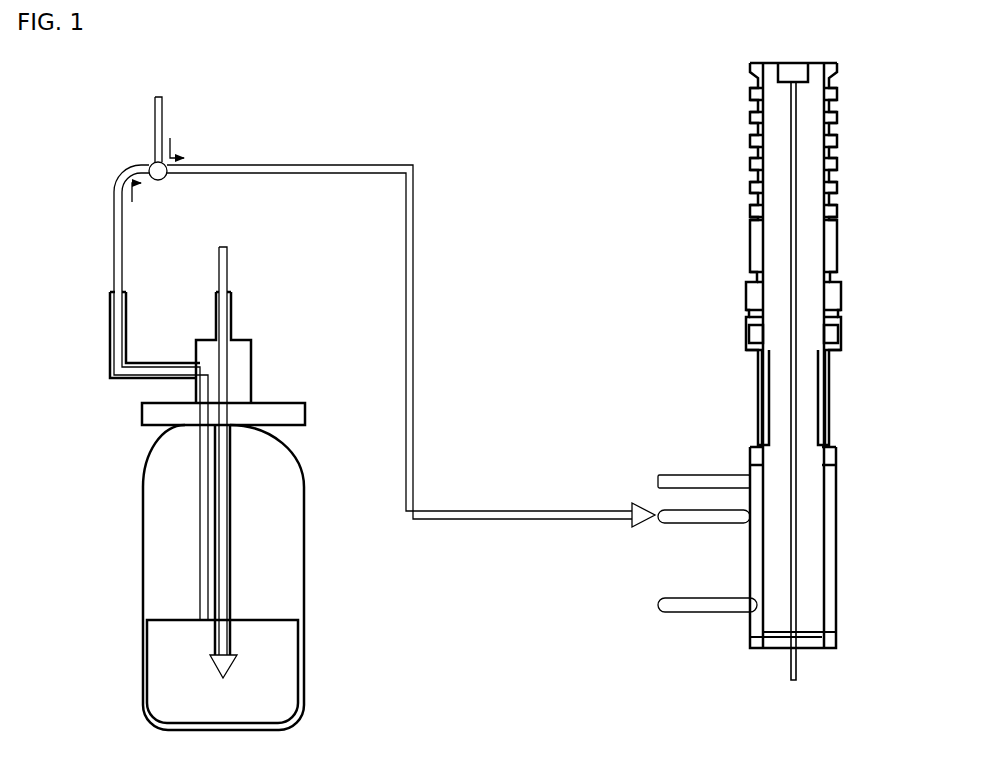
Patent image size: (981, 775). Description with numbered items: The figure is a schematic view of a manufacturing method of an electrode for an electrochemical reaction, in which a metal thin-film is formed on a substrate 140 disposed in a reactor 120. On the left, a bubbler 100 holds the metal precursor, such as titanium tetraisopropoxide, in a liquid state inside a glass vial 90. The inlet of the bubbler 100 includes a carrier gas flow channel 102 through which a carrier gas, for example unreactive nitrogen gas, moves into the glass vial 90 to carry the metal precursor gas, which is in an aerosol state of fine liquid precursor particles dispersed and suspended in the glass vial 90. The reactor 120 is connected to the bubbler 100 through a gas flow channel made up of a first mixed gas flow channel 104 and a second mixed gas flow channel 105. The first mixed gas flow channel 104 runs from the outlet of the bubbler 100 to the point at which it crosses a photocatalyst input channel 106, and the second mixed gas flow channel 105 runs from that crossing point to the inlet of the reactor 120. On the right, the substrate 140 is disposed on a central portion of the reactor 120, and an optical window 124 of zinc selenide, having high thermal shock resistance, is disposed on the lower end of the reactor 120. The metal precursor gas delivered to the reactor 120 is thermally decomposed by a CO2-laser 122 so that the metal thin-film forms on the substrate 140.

The glass vial 90 is at (280, 478).
The bubbler 100 is at (305, 603).
The carrier gas flow channel 102 is at (218, 267).
The first mixed gas flow channel 104 is at (113, 267).
The second mixed gas flow channel 105 is at (408, 280).
The photocatalyst input channel 106 is at (152, 131).
The reactor 120 is at (758, 652).
The CO2-laser 122 is at (797, 668).
The optical window 124 is at (822, 632).
The substrate 140 is at (829, 398).